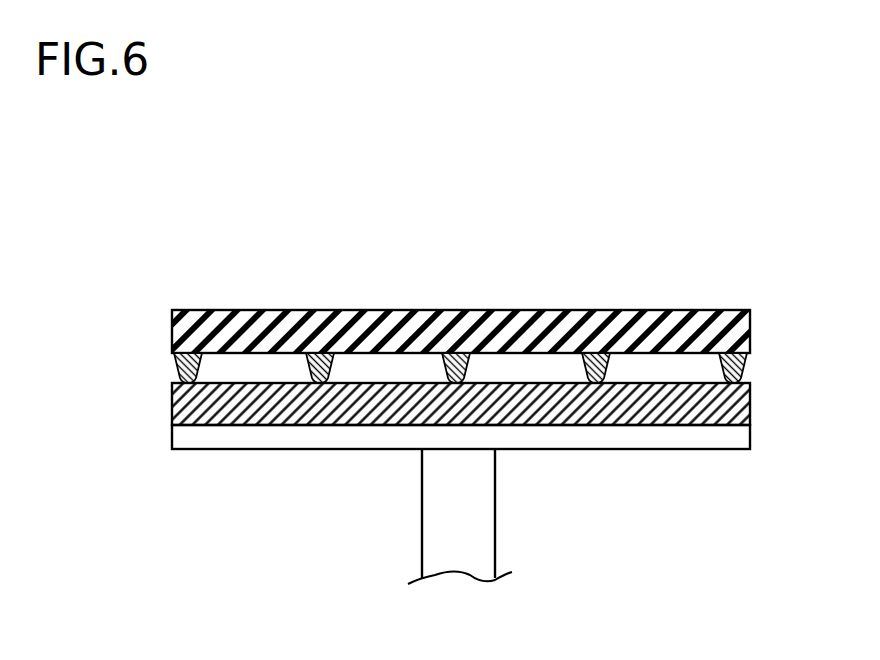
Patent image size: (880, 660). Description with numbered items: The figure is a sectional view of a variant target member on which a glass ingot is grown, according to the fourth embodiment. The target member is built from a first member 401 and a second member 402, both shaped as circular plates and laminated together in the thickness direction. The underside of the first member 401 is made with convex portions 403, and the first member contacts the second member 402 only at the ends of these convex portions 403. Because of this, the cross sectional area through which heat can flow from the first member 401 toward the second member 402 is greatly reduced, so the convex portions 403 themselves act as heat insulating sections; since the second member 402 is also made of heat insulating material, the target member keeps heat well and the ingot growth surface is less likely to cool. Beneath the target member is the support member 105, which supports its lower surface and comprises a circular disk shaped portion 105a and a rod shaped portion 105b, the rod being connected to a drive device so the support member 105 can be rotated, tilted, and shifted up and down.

The first member 401 is at (394, 316).
The second member 402 is at (397, 422).
The convex portions 403 is at (392, 372).
The support member 105 is at (453, 504).
The stage plate 105a is at (461, 468).
The stage support column 105b is at (377, 516).